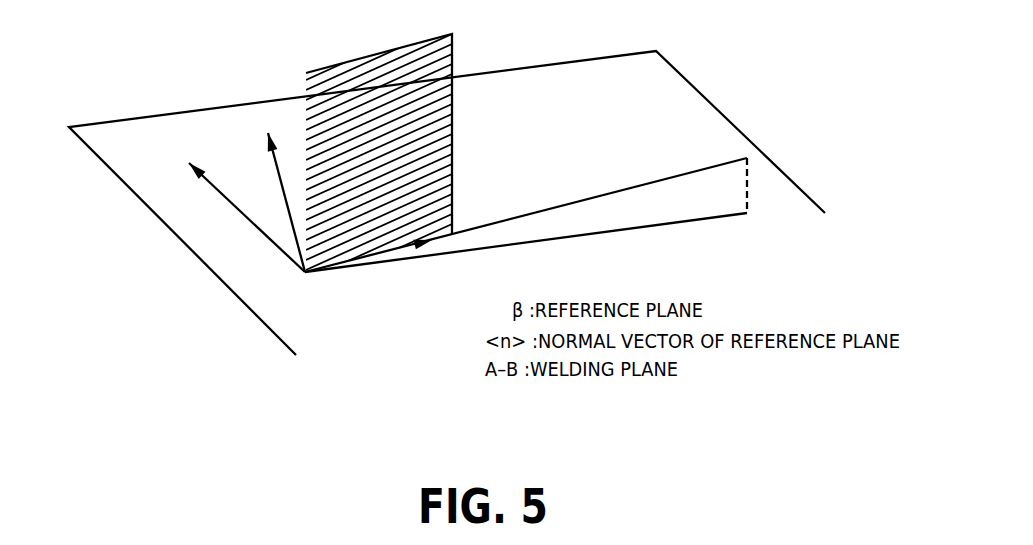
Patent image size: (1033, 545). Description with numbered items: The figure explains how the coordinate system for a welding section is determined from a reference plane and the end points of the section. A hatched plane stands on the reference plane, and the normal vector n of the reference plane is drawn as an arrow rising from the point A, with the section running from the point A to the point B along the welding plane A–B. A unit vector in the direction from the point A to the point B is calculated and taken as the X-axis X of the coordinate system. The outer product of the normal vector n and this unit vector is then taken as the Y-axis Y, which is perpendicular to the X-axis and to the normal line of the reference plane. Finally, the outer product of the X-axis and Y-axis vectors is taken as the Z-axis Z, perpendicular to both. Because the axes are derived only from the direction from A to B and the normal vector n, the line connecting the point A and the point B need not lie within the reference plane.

The normal vector of the reference plane n is at (306, 272).
The point A is at (524, 230).
The point B is at (755, 184).
The X-axis X is at (444, 225).
The Y-axis Y is at (238, 207).
The Z-axis Z is at (283, 190).